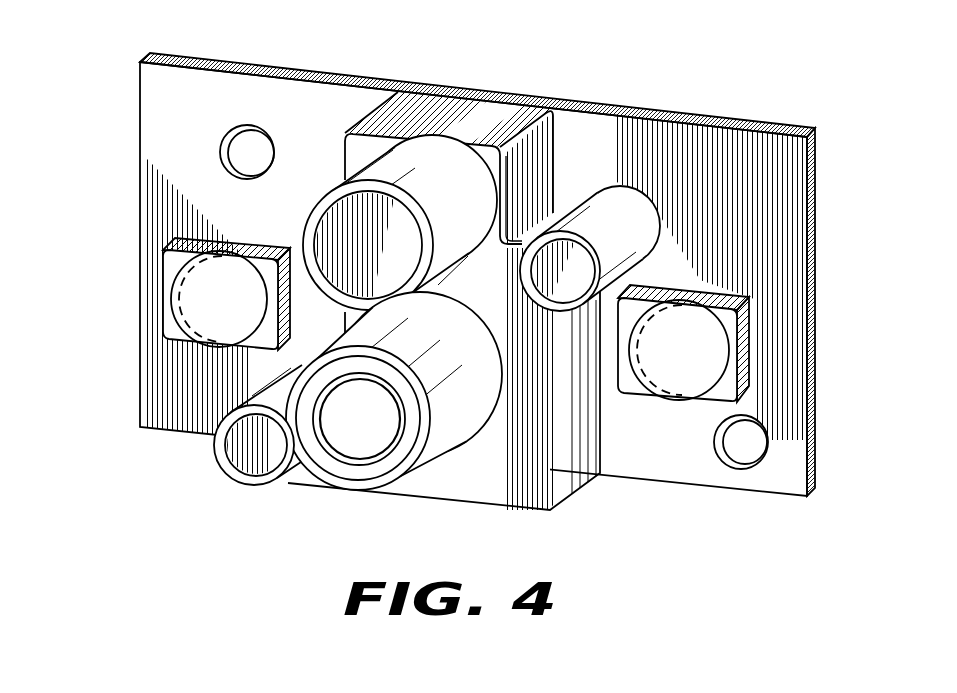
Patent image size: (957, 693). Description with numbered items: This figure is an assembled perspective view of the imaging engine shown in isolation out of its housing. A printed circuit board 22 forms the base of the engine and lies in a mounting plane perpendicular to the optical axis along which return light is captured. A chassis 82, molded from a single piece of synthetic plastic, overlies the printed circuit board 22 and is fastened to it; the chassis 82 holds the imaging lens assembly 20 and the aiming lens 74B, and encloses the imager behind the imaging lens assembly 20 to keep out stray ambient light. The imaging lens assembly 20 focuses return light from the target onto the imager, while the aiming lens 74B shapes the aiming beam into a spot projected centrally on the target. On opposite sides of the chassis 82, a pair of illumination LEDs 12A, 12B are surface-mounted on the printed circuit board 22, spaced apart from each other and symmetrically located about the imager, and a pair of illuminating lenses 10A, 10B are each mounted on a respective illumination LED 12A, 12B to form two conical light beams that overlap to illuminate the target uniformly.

The printed circuit board 22 is at (588, 100).
The chassis 82 is at (458, 503).
The aiming lens 74B is at (370, 222).
The imaging lens assembly 20 is at (360, 412).
The illumination LED 12B is at (195, 243).
The illuminating lens 10B is at (218, 302).
The illumination LED 12A is at (745, 327).
The illuminating lens 10A is at (678, 358).